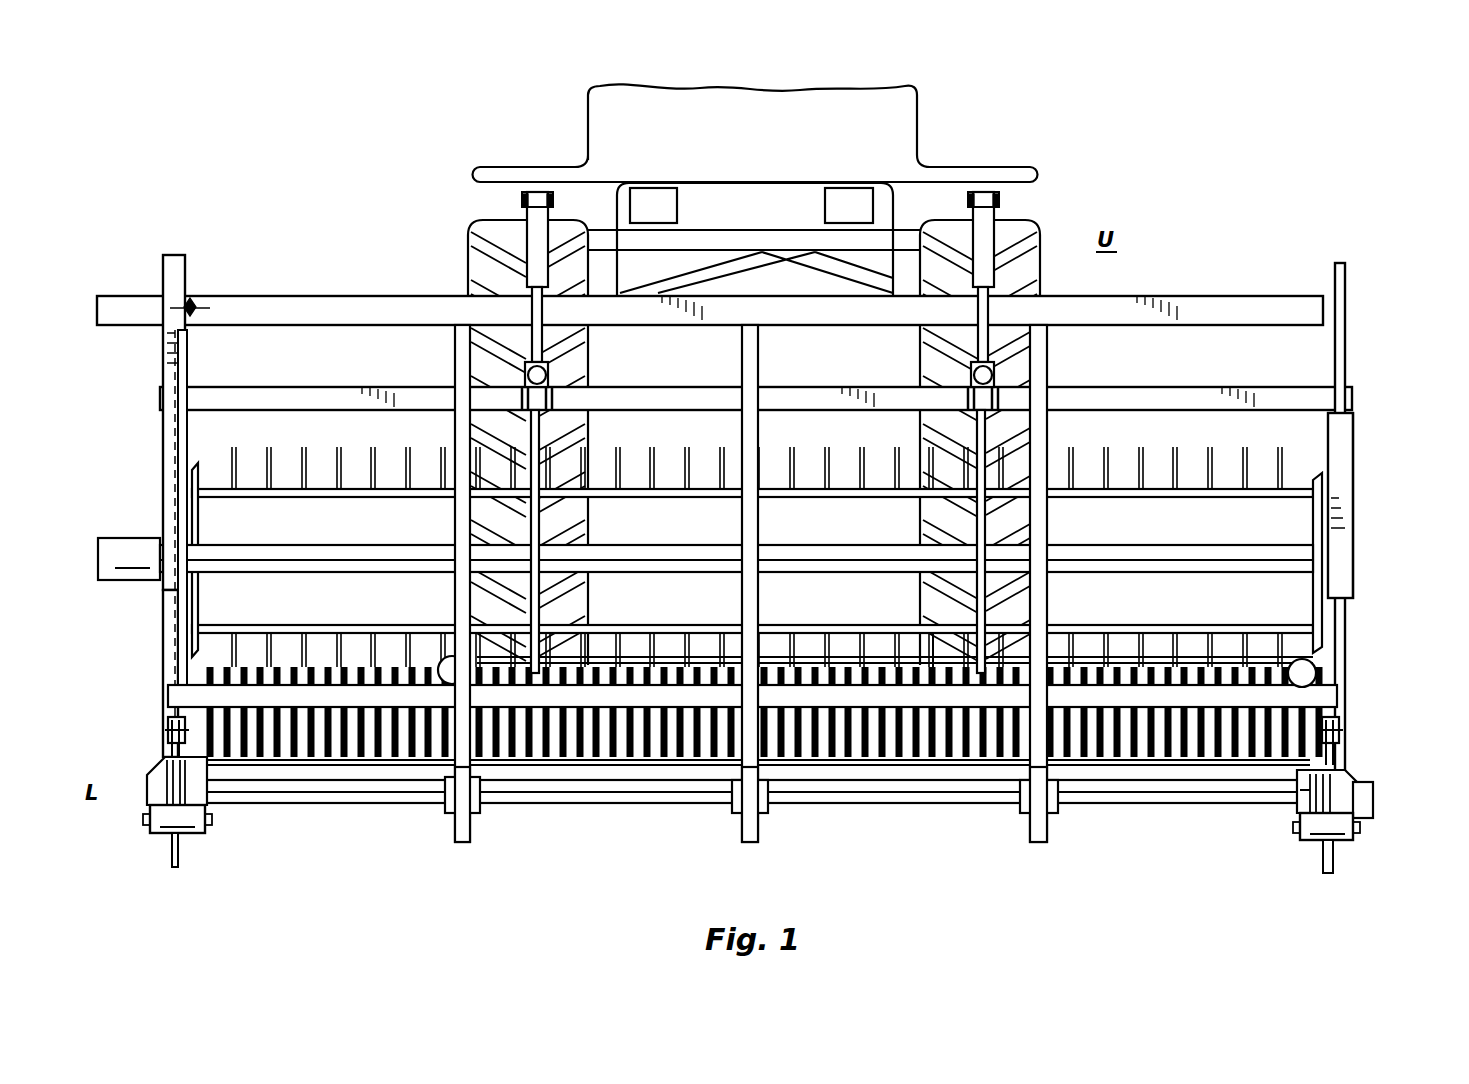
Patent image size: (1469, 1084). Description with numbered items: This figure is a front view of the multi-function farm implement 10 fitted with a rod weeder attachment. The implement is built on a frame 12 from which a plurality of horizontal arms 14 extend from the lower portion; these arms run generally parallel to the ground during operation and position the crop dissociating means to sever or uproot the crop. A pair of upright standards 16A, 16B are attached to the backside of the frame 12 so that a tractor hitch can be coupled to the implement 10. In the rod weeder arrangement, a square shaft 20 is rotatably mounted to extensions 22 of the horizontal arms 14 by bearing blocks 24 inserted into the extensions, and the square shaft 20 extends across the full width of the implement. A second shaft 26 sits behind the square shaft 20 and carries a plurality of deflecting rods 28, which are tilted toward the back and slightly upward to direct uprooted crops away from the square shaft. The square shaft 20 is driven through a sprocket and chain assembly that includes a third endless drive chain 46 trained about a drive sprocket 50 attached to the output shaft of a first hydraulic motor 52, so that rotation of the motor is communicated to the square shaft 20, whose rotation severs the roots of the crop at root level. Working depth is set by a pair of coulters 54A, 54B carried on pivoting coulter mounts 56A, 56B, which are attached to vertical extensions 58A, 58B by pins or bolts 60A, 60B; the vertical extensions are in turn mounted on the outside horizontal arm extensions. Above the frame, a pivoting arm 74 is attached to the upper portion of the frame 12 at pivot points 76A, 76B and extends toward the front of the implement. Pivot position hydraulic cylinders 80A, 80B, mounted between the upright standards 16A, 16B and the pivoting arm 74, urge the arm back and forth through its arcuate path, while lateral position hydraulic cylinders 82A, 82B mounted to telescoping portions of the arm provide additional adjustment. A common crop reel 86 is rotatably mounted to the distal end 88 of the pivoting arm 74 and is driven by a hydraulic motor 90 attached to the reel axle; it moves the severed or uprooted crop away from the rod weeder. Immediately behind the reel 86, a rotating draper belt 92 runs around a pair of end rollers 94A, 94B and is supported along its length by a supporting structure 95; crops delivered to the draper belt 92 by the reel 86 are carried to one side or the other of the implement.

The multi-function farm implement 10 is at (1226, 220).
The frame 12 is at (1240, 297).
The horizontal arms 14 is at (678, 637).
The upright standard 16A is at (421, 397).
The upright standard 16B is at (1070, 393).
The square shaft 20 is at (552, 803).
The extensions 22 is at (470, 842).
The bearing blocks 24 is at (235, 783).
The second shaft 26 is at (322, 762).
The deflecting rods 28 is at (1205, 748).
The third endless drive chain 46 is at (177, 435).
The drive sprocket 50 is at (192, 306).
The first hydraulic motor 52 is at (100, 296).
The coulter 54A is at (168, 866).
The coulter 54B is at (1335, 868).
The pivoting coulter mount 56A is at (150, 770).
The pivoting coulter mount 56B is at (1350, 773).
The vertical extension 58A is at (168, 718).
The vertical extension 58B is at (1340, 720).
The pin or bolt 60A is at (168, 733).
The pin or bolt 60B is at (1340, 745).
The pivoting arm 74 is at (1353, 478).
The pivot point 76A is at (520, 202).
The pivot point 76B is at (999, 200).
The pivot position hydraulic cylinder 80A is at (467, 262).
The pivot position hydraulic cylinder 80B is at (1040, 268).
The lateral position hydraulic cylinder 82A is at (524, 374).
The lateral position hydraulic cylinder 82B is at (1000, 374).
The crop reel 86 is at (1322, 620).
The distal end 88 is at (163, 592).
The hydraulic motor 90 is at (112, 538).
The draper belt 92 is at (1193, 655).
The end roller 94A is at (445, 683).
The end roller 94B is at (1296, 680).
The supporting structure 95 is at (940, 665).